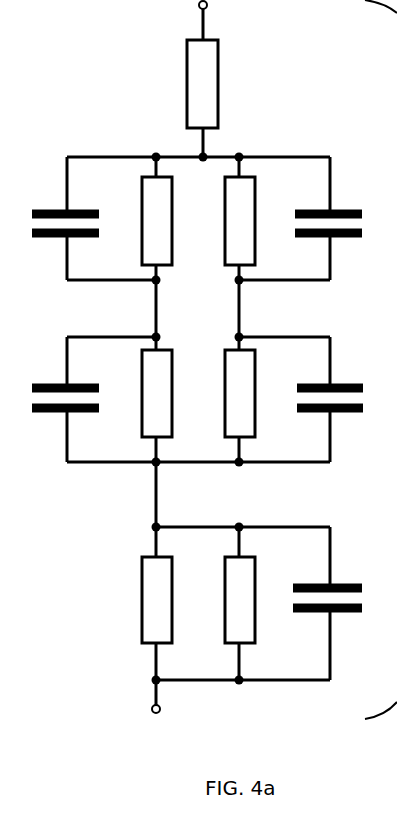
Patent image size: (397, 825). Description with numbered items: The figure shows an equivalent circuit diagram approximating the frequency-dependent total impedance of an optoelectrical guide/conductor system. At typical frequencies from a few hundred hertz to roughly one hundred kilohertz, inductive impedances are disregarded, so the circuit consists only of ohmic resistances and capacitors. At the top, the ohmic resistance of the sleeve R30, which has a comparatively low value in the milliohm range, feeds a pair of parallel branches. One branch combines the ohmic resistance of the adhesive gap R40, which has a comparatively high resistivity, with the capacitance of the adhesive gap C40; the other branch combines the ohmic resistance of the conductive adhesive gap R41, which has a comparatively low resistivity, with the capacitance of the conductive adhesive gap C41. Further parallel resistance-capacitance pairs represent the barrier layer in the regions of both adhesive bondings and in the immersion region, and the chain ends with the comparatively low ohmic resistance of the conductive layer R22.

The ohmic resistance of the sleeve R30 is at (185, 98).
The capacitance of the adhesive gap with the adhesive C40 is at (55, 218).
The ohmic resistance of the adhesive gap for the adhesive R40 is at (140, 221).
The ohmic resistance of the adhesive gap for the conductive adhesive R41 is at (222, 221).
The capacitance of the adhesive gap with the conductive adhesive C41 is at (342, 218).
The ohmic resistance of the conductive layer R22 is at (137, 600).